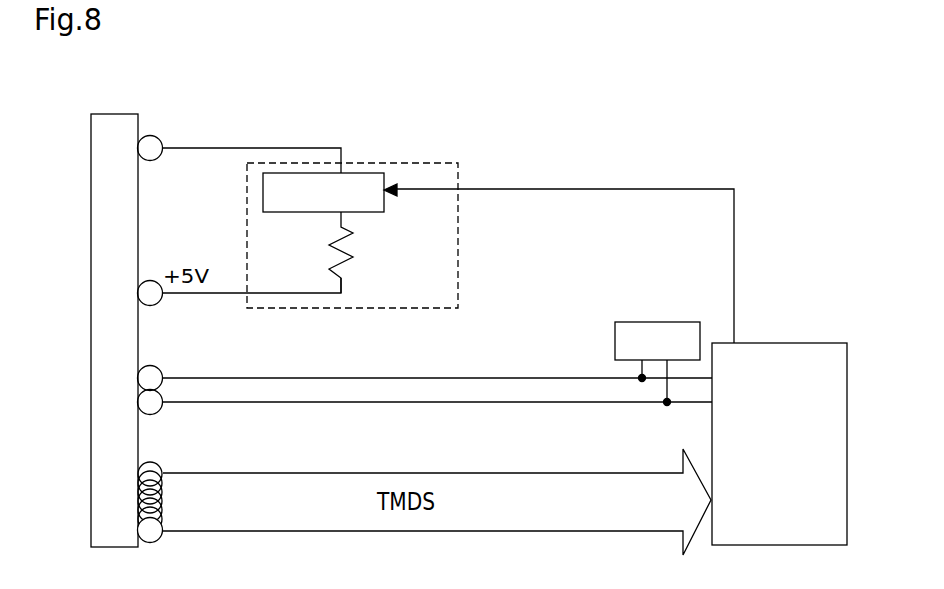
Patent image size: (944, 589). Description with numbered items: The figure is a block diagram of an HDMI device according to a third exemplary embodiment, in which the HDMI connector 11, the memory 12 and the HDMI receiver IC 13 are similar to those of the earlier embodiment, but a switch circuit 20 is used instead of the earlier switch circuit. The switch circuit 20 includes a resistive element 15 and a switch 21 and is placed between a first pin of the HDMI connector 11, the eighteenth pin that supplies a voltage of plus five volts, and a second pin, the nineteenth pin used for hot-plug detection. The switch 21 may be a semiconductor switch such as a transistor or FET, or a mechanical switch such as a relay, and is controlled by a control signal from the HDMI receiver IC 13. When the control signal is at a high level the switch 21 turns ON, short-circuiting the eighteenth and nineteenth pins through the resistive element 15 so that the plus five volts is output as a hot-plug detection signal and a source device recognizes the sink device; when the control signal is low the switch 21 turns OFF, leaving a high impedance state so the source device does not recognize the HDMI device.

The HDMI connector 11 is at (115, 113).
The memory 12 is at (655, 322).
The HDMI receiver IC 13 is at (772, 343).
The resistive element 15 is at (352, 253).
The switch circuit 20 is at (454, 160).
The switch 21 is at (358, 173).